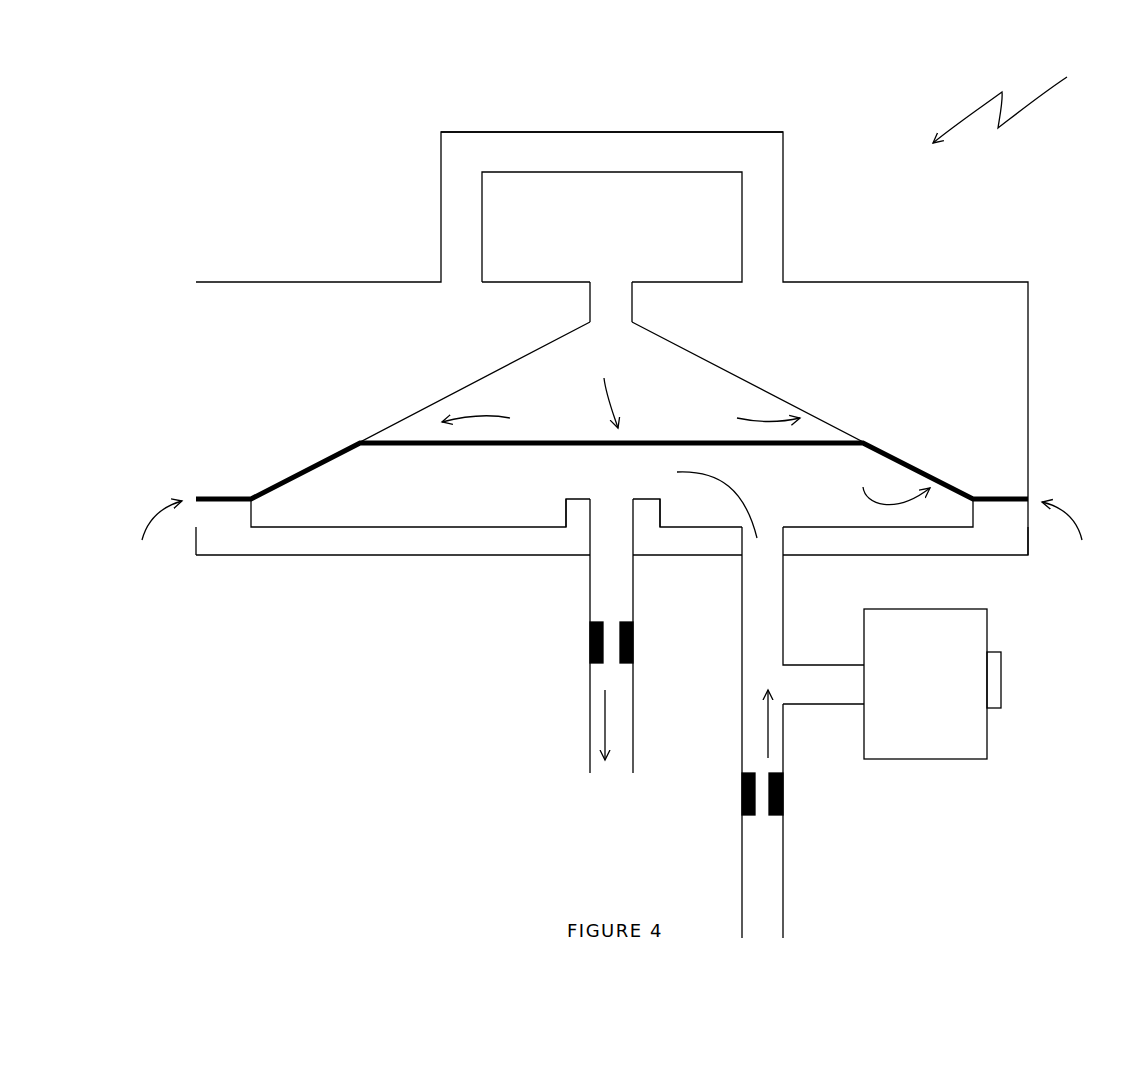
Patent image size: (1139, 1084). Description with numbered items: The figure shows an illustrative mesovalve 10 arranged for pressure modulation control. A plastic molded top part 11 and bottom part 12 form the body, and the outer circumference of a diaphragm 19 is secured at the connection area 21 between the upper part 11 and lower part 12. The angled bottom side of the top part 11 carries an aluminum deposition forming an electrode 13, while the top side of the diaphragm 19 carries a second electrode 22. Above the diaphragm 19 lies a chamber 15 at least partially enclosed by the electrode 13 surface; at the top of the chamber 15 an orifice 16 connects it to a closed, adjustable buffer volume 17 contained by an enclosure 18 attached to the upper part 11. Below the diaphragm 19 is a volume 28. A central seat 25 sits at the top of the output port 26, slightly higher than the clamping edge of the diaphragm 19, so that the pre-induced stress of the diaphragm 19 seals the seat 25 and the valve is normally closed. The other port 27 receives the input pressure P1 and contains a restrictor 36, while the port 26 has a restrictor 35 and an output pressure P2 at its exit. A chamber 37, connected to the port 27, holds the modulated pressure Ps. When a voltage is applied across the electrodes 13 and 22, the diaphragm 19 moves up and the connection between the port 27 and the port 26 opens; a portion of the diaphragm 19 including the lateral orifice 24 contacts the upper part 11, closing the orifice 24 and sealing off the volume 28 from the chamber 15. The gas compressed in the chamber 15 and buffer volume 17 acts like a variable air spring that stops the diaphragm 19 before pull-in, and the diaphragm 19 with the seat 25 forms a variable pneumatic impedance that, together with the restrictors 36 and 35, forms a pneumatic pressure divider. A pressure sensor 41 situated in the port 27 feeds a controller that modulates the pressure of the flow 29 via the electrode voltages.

The mesovalve 10 is at (1015, 94).
The top part 11 is at (222, 390).
The bottom part 12 is at (223, 540).
The electrode 13 is at (621, 411).
The chamber 15 is at (565, 380).
The orifice 16 is at (620, 323).
The buffer volume 17 is at (619, 232).
The enclosure 18 is at (618, 145).
The diaphragm 19 is at (503, 447).
The connection area 21 is at (614, 536).
The electrode 22 is at (607, 387).
The orifice 24 is at (886, 479).
The seat 25 is at (578, 513).
The port 26 is at (620, 598).
The port 27 is at (769, 598).
The volume 28 is at (810, 490).
The flow 29 is at (607, 508).
The restrictor 35 is at (633, 640).
The restrictor 36 is at (742, 800).
The chamber 37 is at (934, 682).
The pressure sensor 41 is at (1001, 682).